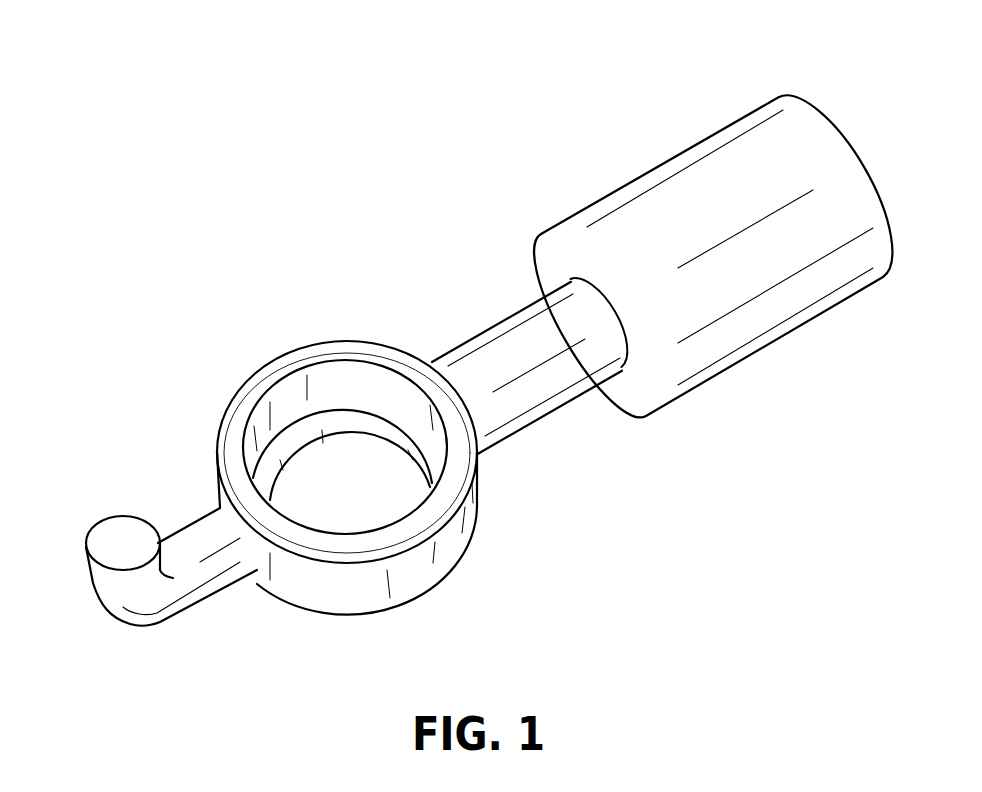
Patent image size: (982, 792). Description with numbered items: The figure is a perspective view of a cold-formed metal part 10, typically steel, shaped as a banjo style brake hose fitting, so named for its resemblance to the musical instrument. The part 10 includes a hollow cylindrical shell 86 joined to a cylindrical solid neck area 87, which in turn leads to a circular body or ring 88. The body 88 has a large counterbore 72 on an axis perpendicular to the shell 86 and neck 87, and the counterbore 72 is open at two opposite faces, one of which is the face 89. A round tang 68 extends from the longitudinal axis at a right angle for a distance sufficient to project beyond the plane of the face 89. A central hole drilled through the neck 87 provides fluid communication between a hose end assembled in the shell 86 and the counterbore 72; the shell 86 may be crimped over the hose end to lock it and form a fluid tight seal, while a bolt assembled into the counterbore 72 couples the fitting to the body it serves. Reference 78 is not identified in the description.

The cold-formed metal part 10 is at (500, 210).
The hollow cylindrical shell 86 is at (694, 142).
The cylindrical solid neck area 87 is at (527, 430).
The circular body 88 is at (425, 563).
The counterbore 72 is at (325, 383).
The face 89 is at (257, 382).
The inner bore shoulder 78 is at (297, 462).
The round tang 68 is at (102, 595).